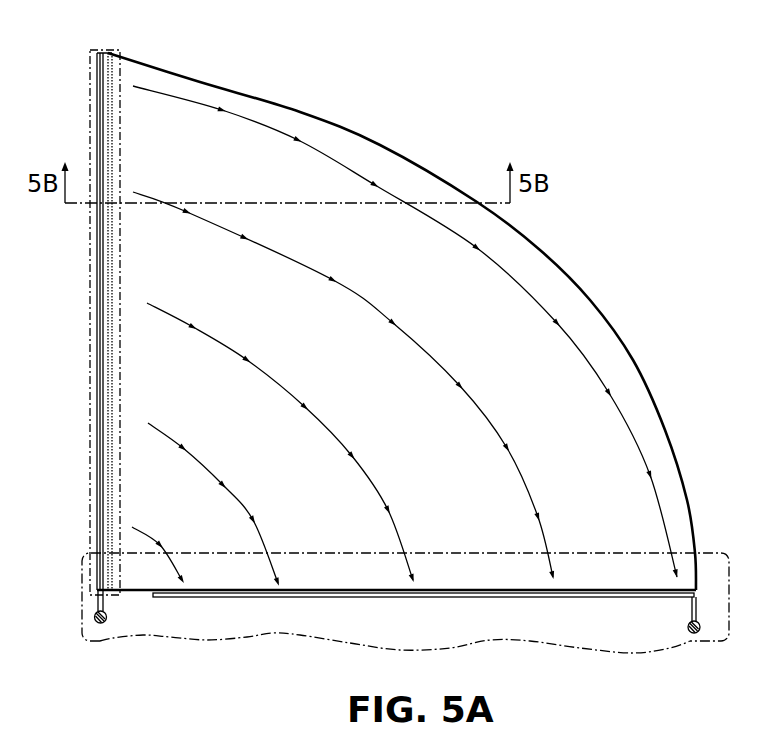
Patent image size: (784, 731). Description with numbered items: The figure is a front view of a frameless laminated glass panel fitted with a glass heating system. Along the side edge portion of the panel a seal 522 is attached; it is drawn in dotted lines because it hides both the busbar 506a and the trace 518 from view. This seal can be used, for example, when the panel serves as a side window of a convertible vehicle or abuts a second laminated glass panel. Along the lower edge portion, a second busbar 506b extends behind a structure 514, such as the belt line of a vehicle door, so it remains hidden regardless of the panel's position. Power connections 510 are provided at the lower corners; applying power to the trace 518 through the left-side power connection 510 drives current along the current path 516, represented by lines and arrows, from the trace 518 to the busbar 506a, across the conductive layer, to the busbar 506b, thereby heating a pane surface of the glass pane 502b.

The glass pane 502b is at (438, 168).
The busbar 506a is at (98, 117).
The busbar 506b is at (522, 597).
The power connection 510 is at (101, 624).
The structure 514 is at (290, 635).
The current path 516 is at (577, 345).
The trace 518 is at (107, 335).
The seal 522 is at (120, 70).